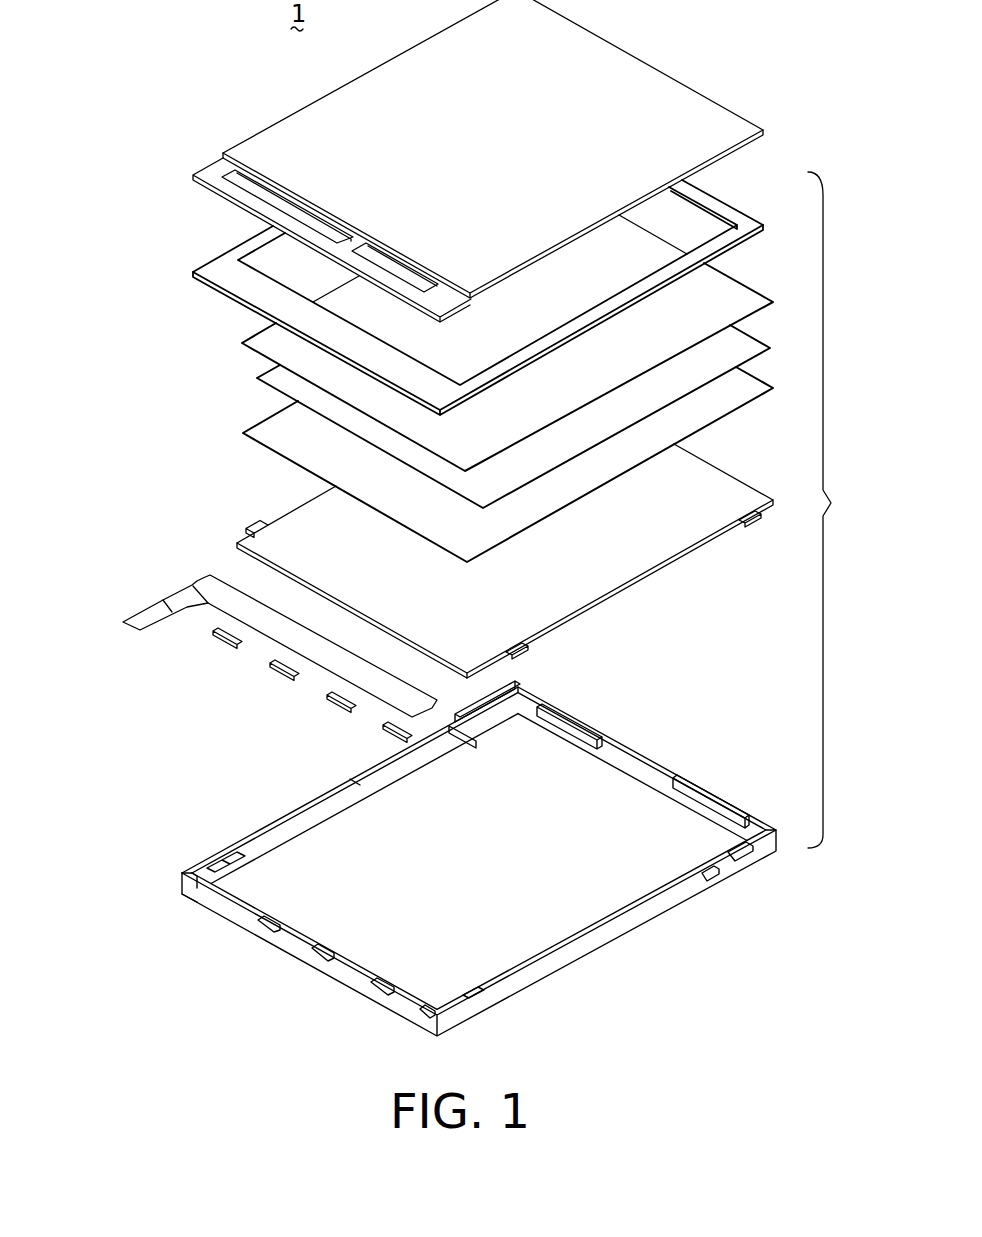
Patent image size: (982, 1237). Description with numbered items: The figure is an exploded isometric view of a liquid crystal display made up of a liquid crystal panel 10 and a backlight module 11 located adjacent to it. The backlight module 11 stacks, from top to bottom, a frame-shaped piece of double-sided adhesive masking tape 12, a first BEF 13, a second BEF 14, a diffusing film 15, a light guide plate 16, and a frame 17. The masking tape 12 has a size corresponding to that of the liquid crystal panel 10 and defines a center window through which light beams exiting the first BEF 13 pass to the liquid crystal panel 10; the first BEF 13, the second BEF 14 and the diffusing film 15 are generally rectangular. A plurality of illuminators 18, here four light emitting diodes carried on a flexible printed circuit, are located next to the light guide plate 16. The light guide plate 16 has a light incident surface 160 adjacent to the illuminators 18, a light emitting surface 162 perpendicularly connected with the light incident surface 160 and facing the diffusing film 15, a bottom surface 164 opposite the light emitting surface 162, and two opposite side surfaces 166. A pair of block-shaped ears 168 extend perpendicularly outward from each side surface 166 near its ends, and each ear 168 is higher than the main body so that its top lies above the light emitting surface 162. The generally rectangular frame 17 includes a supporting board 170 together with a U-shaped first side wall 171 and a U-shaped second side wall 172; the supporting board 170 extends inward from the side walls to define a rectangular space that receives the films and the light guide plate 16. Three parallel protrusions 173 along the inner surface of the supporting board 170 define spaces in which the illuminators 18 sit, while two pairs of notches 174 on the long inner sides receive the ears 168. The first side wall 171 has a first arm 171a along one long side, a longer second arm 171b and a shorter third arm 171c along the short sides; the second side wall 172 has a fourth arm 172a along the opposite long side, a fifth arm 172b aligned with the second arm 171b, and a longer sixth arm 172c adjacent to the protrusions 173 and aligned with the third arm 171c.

The liquid crystal panel 10 is at (688, 112).
The backlight module 11 is at (839, 510).
The masking tape 12 is at (702, 203).
The first BEF 13 is at (714, 290).
The second BEF 14 is at (733, 350).
The diffusing film 15 is at (728, 393).
The light guide plate 16 is at (481, 544).
The light incident surface 160 is at (481, 561).
The light emitting surface 162 is at (704, 493).
The bottom surface 164 is at (683, 560).
The side surfaces 166 is at (305, 496).
The ears 168 is at (250, 525).
The frame 17 is at (478, 845).
The supporting board 170 is at (530, 712).
The first side wall 171 is at (288, 814).
The first arm 171a is at (352, 789).
The second arm 171b is at (597, 728).
The third arm 171c is at (187, 888).
The second side wall 172 is at (584, 952).
The fourth arm 172a is at (666, 895).
The fifth arm 172b is at (722, 798).
The sixth arm 172c is at (341, 969).
The protrusions 173 is at (264, 922).
The notches 174 is at (234, 869).
The illuminators 18 is at (227, 638).